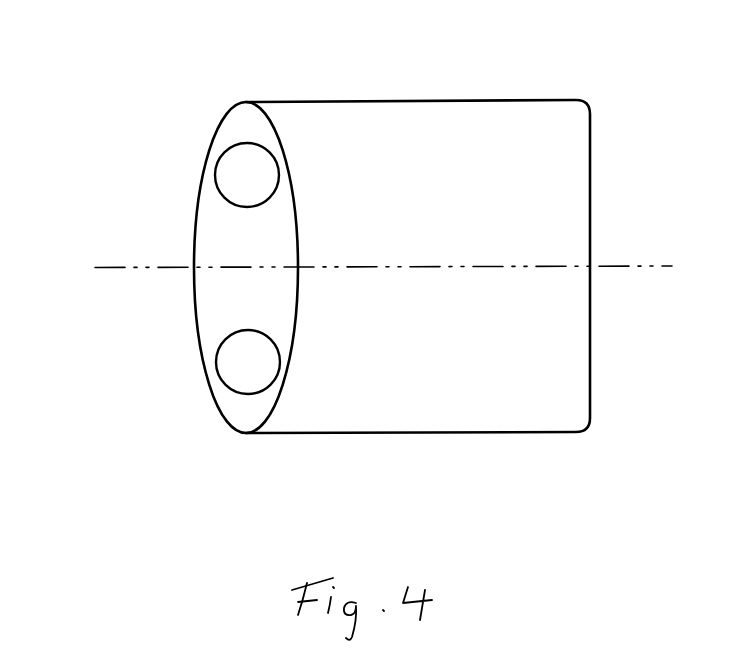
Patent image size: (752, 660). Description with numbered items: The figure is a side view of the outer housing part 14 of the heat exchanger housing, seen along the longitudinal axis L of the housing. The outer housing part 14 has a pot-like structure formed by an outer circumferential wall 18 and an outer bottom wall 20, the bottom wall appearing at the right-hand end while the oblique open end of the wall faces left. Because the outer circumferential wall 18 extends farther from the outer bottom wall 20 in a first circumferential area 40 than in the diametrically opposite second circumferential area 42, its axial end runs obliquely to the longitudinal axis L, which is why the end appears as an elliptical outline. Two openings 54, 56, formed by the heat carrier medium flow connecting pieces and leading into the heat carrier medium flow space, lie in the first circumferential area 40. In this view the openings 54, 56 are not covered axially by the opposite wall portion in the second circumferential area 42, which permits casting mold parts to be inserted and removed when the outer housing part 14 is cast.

The outer housing part 14 is at (623, 51).
The first circumferential area 40 is at (202, 237).
The opening 56 is at (245, 163).
The opening 54 is at (218, 468).
The longitudinal axis of the housing L is at (662, 223).
The second circumferential area 42 is at (313, 478).
The outer circumferential wall 18 is at (437, 463).
The outer bottom wall 20 is at (623, 345).